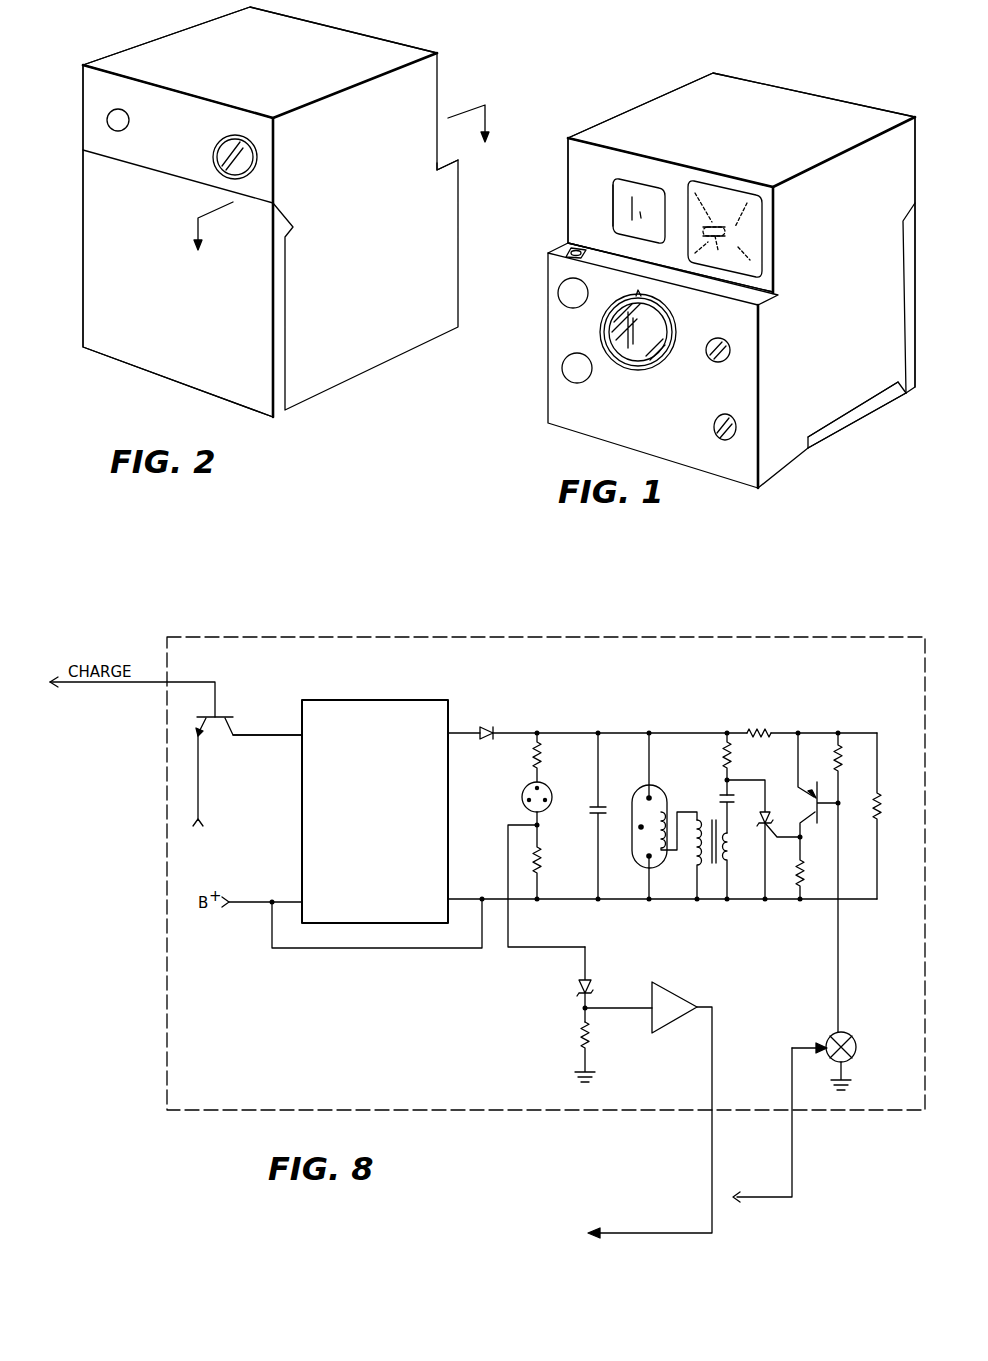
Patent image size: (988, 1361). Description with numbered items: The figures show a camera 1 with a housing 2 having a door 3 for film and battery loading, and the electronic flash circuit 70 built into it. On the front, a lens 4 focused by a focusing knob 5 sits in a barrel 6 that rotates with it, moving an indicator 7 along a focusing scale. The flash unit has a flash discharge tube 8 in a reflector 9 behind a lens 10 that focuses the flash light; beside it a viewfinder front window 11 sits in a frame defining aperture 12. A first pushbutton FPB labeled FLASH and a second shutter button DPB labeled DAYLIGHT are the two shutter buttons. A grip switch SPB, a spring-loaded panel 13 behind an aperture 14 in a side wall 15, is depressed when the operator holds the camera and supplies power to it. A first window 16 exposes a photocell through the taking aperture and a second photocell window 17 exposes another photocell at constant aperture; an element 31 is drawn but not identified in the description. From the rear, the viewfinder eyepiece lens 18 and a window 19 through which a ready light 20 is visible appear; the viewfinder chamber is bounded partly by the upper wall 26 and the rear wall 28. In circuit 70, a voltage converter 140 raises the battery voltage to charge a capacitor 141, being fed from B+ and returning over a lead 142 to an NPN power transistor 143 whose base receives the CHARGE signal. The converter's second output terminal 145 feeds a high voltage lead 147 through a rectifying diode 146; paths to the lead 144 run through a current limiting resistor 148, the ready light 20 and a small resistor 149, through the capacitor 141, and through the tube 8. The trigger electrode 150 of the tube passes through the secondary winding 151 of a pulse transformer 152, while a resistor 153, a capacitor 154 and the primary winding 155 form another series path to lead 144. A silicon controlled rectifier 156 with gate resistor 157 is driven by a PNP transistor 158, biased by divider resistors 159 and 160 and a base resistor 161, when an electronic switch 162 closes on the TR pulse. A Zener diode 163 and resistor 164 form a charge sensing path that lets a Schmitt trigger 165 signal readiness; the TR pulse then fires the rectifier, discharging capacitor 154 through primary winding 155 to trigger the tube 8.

In FIG. 2, the camera 1 is at (410, 364).
In FIG. 1, the camera 1 is at (637, 90).
In FIG. 2, the housing 2 is at (333, 347).
In FIG. 1, the housing 2 is at (905, 161).
In FIG. 2, the door 3 is at (288, 430).
In FIG. 1, the door 3 is at (917, 283).
In FIG. 1, the lens 4 is at (663, 330).
In FIG. 2, the focusing knob 5 is at (442, 160).
In FIG. 1, the focusing knob 5 is at (572, 250).
In FIG. 1, the barrel 6 is at (673, 353).
In FIG. 1, the indicator 7 is at (645, 292).
In FIG. 1, the flash discharge tube 8 is at (725, 233).
In FIG. 8, the flash discharge tube 8 is at (655, 787).
In FIG. 1, the reflector 9 is at (732, 215).
In FIG. 1, the lens 10 is at (740, 253).
In FIG. 1, the front window 11 is at (632, 187).
In FIG. 1, the aperture 12 is at (613, 213).
In FIG. 1, the spring-loaded panel 13 is at (890, 395).
In FIG. 1, the aperture 14 is at (810, 448).
In FIG. 1, the side wall 15 is at (777, 452).
In FIG. 1, the first window 16 is at (723, 358).
In FIG. 1, the second photocell window 17 is at (730, 424).
In FIG. 2, the lens 18 is at (223, 177).
In FIG. 2, the window 19 is at (118, 132).
In FIG. 8, the ready light 20 is at (552, 812).
In FIG. 2, the upper wall 26 is at (350, 47).
In FIG. 1, the upper wall 26 is at (730, 107).
In FIG. 2, the rear wall 28 is at (92, 88).
In FIG. 1, the upper housing edge 31 is at (570, 153).
In FIG. 8, the electronic flash circuit 70 is at (421, 1081).
In FIG. 8, the voltage converter 140 is at (398, 877).
In FIG. 8, the capacitor 141 is at (607, 803).
In FIG. 8, the lead 142 is at (250, 733).
In FIG. 8, the NPN power transistor 143 is at (222, 710).
In FIG. 8, the lead 144 is at (555, 903).
In FIG. 8, the second output terminal 145 is at (463, 736).
In FIG. 8, the rectifying diode 146 is at (490, 725).
In FIG. 8, the positive high voltage supply lead 147 is at (572, 733).
In FIG. 8, the current limiting resistor 148 is at (540, 770).
In FIG. 8, the resistor 149 is at (542, 868).
In FIG. 8, the trigger electrode 150 is at (662, 815).
In FIG. 8, the high voltage secondary winding 151 is at (695, 853).
In FIG. 8, the pulse transformer 152 is at (715, 872).
In FIG. 8, the current limiting resistor 153 is at (732, 758).
In FIG. 8, the capacitor 154 is at (735, 806).
In FIG. 8, the low voltage primary winding 155 is at (732, 847).
In FIG. 8, the silicon controlled rectifier 156 is at (770, 812).
In FIG. 8, the resistor 157 is at (807, 868).
In FIG. 8, the PNP transistor 158 is at (813, 780).
In FIG. 8, the resistor 159 is at (758, 728).
In FIG. 8, the resistor 160 is at (882, 815).
In FIG. 8, the biasing resistor 161 is at (848, 762).
In FIG. 8, the electronic switch 162 is at (855, 1047).
In FIG. 8, the Zener diode 163 is at (597, 988).
In FIG. 8, the resistor 164 is at (582, 1042).
In FIG. 8, the Schmitt trigger circuit 165 is at (673, 990).
In FIG. 1, the first pushbutton FPB is at (552, 300).
In FIG. 1, the second shutter button DPB is at (555, 377).
In FIG. 1, the grip switch SPB is at (846, 427).